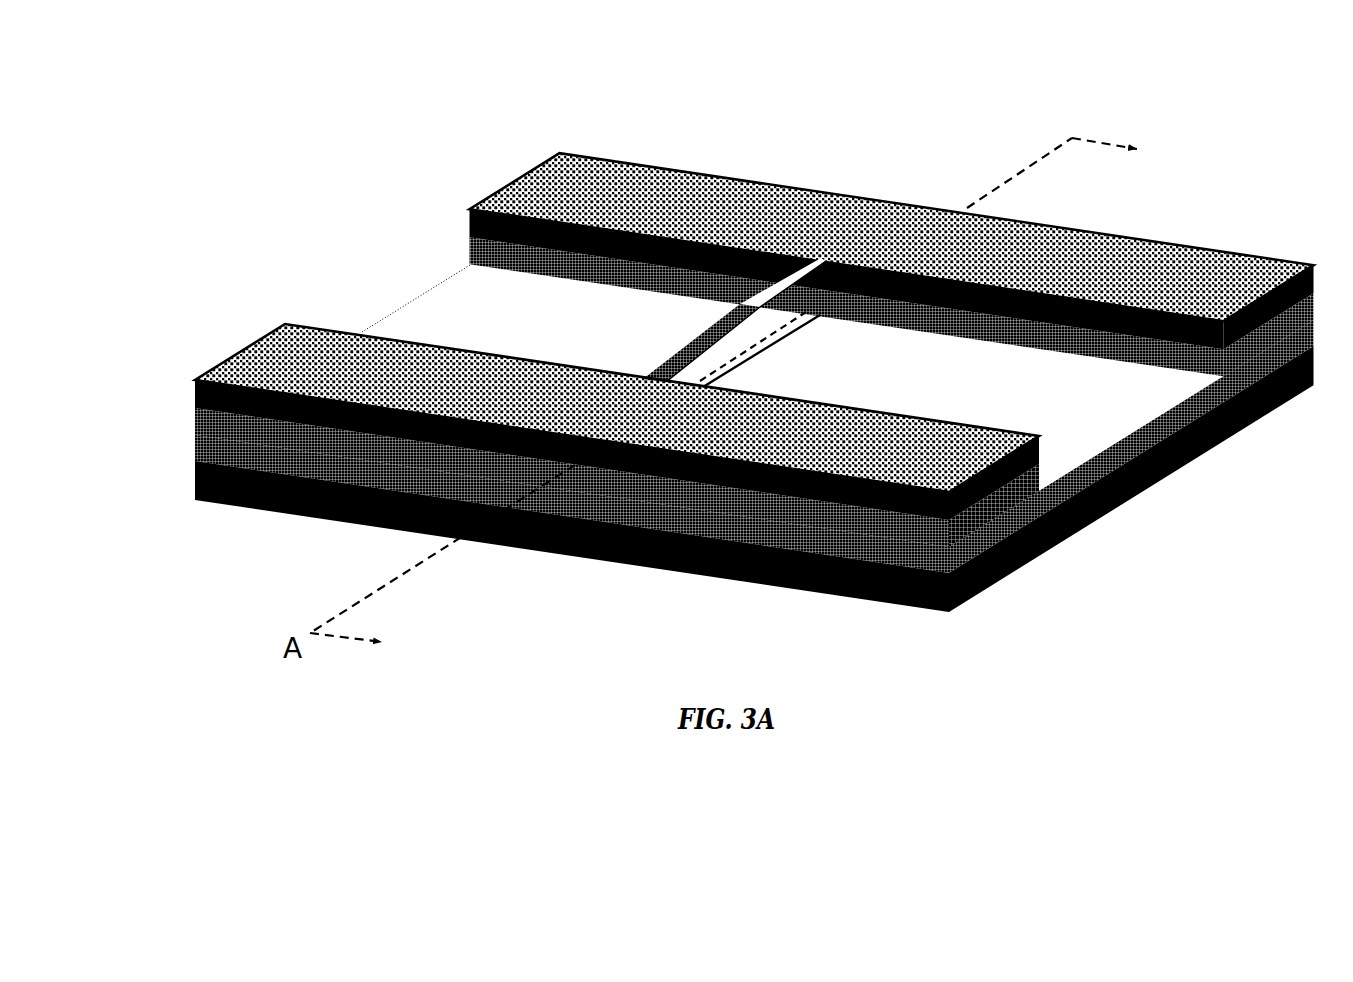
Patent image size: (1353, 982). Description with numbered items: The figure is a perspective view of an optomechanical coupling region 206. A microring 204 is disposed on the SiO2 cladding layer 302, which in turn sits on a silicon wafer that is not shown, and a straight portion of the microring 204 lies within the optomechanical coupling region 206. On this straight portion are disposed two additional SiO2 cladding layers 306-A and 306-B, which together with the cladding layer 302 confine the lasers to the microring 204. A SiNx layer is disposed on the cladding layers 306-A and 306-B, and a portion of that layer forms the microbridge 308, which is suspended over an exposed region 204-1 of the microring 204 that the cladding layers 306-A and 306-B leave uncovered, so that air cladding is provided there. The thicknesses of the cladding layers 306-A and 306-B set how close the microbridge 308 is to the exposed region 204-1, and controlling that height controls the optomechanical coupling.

The optomechanical coupling region 206 is at (701, 338).
The SiO2 cladding layer 302 is at (188, 490).
The SiO2 cladding layer 306-A is at (190, 421).
The SiO2 cladding layer 306-B is at (463, 242).
The microring 204 is at (403, 323).
The exposed region 204-1 is at (782, 351).
The microbridge 308 is at (712, 318).